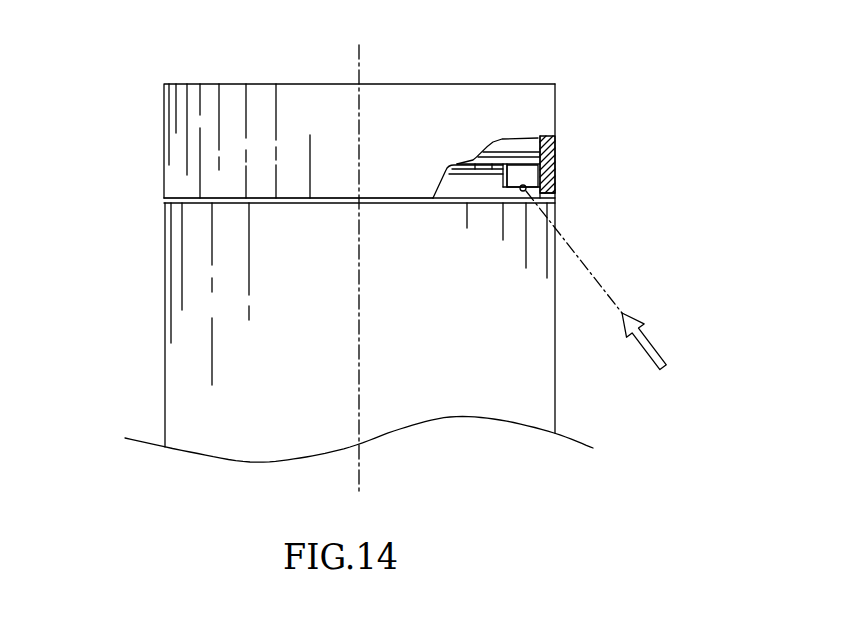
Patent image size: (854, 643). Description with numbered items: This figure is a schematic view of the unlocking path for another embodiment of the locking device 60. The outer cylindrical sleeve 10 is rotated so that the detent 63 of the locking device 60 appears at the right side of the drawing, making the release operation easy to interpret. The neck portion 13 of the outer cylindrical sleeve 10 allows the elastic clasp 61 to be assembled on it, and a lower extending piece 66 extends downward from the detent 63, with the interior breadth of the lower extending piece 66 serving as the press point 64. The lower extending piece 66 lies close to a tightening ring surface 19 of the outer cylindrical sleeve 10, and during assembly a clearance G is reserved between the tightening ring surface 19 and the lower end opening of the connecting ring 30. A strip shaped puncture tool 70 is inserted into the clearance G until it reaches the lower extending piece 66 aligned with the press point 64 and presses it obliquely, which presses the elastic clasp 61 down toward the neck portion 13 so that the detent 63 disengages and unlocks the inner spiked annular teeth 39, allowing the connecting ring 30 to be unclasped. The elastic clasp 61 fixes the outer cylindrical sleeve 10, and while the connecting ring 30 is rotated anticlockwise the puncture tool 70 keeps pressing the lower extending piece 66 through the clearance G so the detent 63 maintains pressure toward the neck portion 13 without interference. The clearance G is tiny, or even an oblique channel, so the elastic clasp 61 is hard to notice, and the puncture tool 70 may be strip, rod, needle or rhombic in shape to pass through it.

The outer cylindrical sleeve 10 is at (153, 313).
The neck portion 13 is at (462, 177).
The tightening ring surface 19 is at (185, 200).
The connecting ring 30 is at (153, 138).
The inner spiked annular teeth 39 is at (458, 163).
The locking device 60 is at (563, 178).
The elastic clasp 61 is at (545, 167).
The detent 63 is at (507, 182).
The press point 64 is at (522, 178).
The lower extending piece 66 is at (523, 193).
The puncture tool 70 is at (655, 345).
The clearance G is at (560, 206).